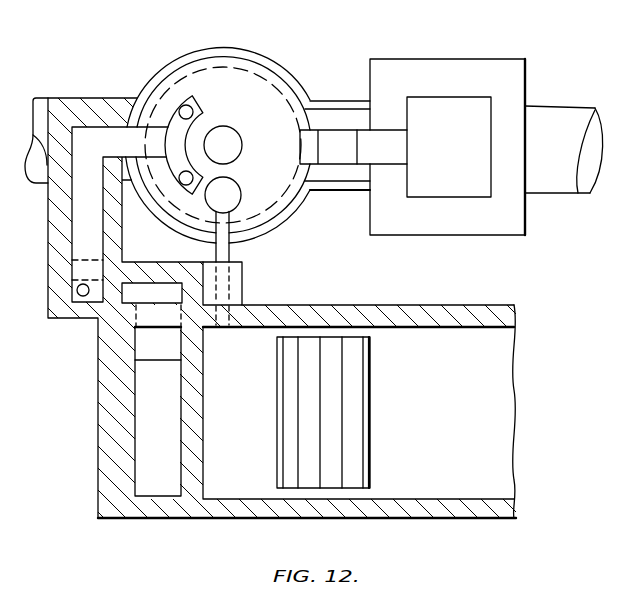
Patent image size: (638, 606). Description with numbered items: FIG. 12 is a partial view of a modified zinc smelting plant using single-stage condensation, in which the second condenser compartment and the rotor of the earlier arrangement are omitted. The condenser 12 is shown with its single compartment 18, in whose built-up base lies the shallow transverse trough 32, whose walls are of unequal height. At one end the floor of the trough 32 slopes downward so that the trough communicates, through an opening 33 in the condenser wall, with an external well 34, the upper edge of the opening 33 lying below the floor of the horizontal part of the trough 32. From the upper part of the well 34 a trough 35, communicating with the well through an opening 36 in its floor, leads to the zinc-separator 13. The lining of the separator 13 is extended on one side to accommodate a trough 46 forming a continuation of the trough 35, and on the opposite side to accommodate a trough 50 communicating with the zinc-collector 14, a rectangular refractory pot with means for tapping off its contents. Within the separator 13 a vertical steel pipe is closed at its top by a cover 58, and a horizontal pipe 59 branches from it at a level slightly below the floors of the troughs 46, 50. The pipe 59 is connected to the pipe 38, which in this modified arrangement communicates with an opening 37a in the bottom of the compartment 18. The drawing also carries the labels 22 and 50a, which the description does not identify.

The condenser 12 is at (456, 524).
The zinc-separator 13 is at (267, 46).
The zinc-collector 14 is at (530, 99).
The compartment 18 is at (403, 470).
The plate stack 22 is at (300, 481).
The shallow transverse trough 32 is at (165, 403).
The opening 33 is at (162, 313).
The external well 34 is at (140, 292).
The trough 35 is at (83, 227).
The opening 36 is at (83, 298).
The opening 37a is at (223, 318).
The pipe 38 is at (243, 274).
The trough 46 is at (158, 147).
The trough 50 is at (367, 147).
The rod segment 50a is at (344, 155).
The cover 58 is at (231, 197).
The horizontal pipe 59 is at (230, 240).